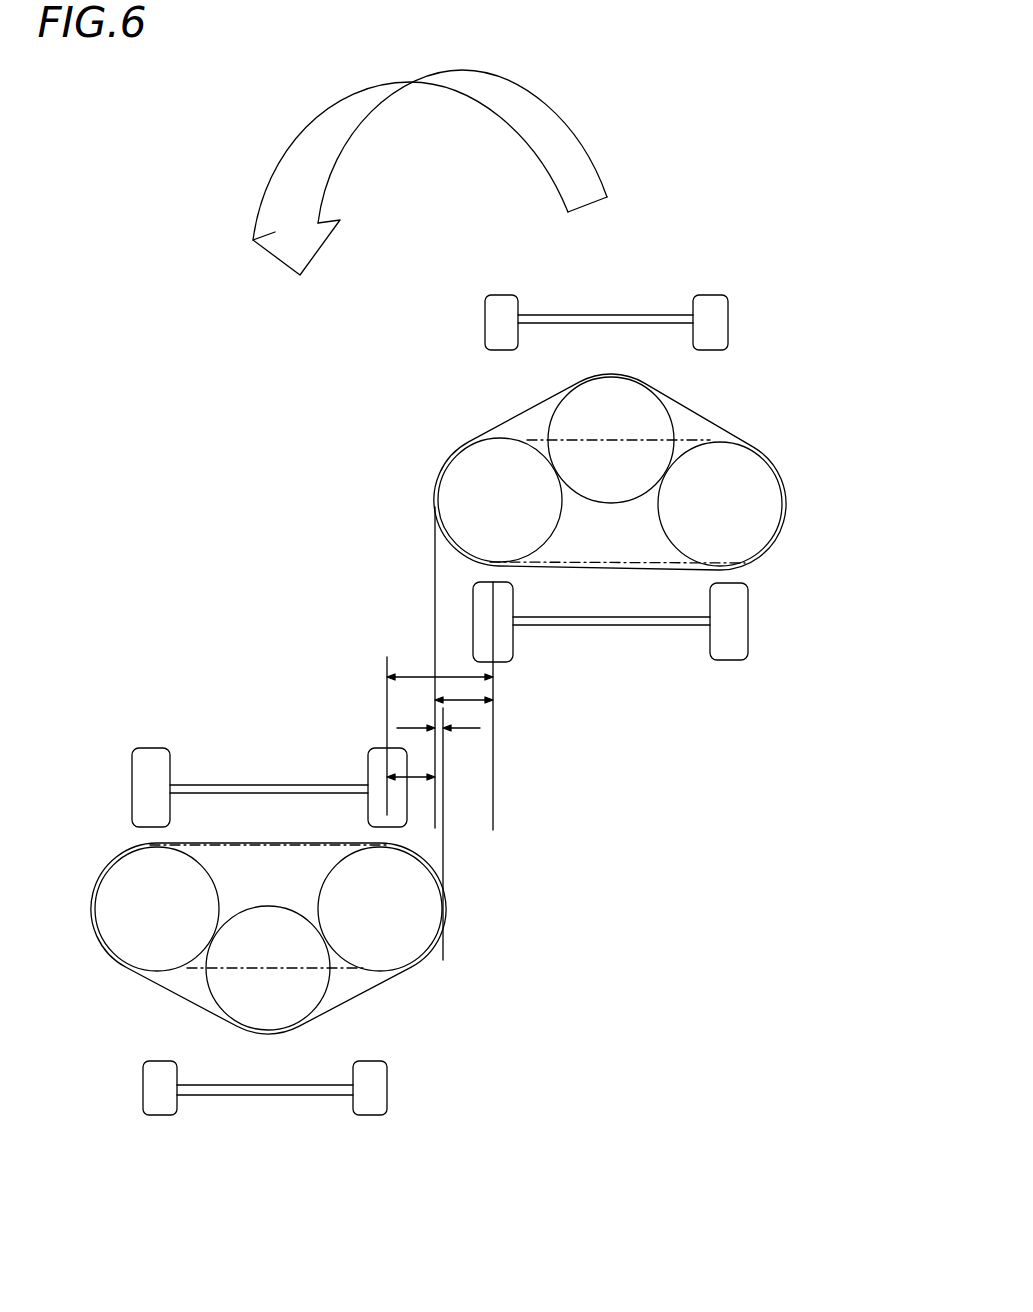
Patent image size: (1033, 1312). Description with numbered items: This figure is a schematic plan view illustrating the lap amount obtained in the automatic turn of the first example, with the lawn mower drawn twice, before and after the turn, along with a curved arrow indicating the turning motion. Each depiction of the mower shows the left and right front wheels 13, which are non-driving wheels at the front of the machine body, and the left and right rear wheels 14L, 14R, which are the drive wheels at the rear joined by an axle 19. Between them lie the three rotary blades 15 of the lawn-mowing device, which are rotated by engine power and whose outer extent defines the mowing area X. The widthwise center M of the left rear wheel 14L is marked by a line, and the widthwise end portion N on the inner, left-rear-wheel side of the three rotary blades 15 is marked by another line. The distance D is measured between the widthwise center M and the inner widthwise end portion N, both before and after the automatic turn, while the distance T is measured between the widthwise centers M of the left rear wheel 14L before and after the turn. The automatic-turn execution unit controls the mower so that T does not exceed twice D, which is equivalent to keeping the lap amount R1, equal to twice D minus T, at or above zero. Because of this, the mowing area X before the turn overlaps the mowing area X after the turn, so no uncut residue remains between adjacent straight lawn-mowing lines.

The front wheel 13 is at (505, 295).
The left rear wheel 14L is at (506, 648).
The right rear wheel 14R is at (740, 646).
The rotary blade 15 is at (482, 480).
The axle shaft 19 is at (665, 627).
The mowing area X is at (618, 547).
The widthwise end portion N is at (435, 563).
The widthwise center M is at (387, 665).
The distance between widthwise centers T is at (427, 675).
The distance D is at (465, 703).
The lap amount R1 is at (443, 733).